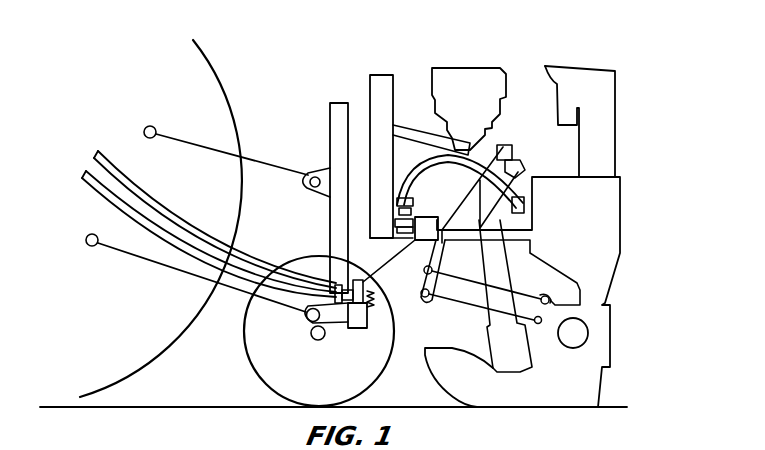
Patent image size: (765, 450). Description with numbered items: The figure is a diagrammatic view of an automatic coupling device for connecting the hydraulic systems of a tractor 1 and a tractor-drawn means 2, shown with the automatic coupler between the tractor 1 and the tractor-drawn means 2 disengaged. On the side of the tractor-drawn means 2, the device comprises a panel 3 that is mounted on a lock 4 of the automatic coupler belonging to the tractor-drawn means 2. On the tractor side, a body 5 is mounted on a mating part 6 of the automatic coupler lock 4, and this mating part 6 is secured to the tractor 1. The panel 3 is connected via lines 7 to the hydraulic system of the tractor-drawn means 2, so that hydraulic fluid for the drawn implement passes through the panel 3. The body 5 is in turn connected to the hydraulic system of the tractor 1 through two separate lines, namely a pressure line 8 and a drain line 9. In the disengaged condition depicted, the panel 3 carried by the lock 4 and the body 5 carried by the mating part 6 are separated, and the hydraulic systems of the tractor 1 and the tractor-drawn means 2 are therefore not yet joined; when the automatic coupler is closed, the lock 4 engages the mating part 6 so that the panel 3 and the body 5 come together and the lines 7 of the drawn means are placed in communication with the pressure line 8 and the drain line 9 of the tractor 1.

The tractor 1 is at (222, 80).
The tractor-drawn means 2 is at (617, 140).
The panel 3 is at (414, 212).
The lock 4 is at (380, 86).
The body 5 is at (367, 283).
The mating part 6 is at (335, 223).
The lines 7 is at (425, 165).
The pressure line 8 is at (232, 281).
The drain line 9 is at (234, 259).